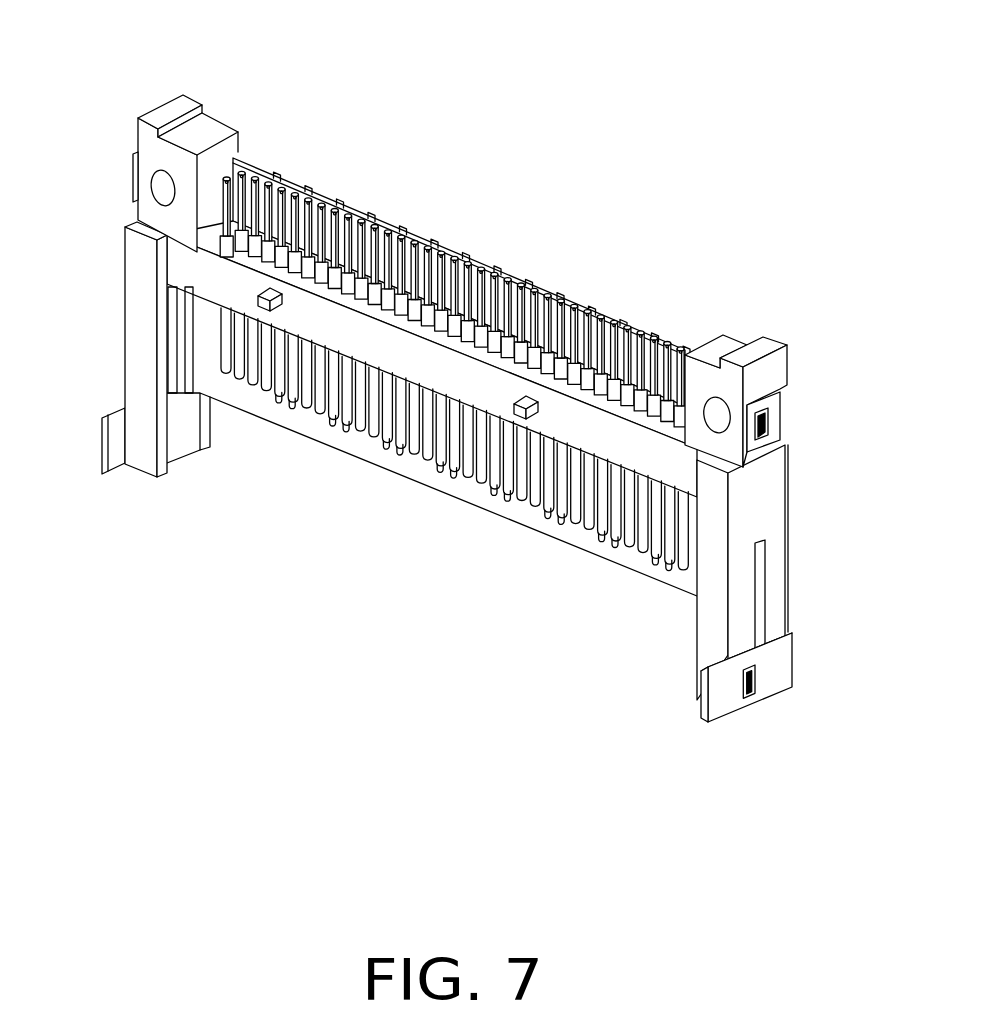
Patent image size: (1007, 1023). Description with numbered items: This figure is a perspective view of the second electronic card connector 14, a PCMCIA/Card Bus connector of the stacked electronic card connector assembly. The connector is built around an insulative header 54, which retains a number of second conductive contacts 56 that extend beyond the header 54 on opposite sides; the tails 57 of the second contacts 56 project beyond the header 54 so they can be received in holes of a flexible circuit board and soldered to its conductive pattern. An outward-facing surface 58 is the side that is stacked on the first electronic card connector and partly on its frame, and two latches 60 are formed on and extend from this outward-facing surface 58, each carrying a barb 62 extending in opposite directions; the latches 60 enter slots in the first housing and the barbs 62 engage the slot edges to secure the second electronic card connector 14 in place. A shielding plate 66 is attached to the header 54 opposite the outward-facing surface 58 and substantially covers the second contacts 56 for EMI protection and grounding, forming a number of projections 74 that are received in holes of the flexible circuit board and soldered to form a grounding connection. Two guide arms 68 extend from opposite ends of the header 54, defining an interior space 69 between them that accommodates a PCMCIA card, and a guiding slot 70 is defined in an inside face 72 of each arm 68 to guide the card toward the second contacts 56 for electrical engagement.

The second electronic card connector 14 is at (398, 49).
The insulative header 54 is at (597, 470).
The second conductive contacts 56 is at (639, 538).
The tails 57 is at (593, 318).
The outward-facing surface 58 is at (445, 376).
The latches 60 is at (273, 305).
The barb 62 is at (527, 410).
The shielding plate 66 is at (530, 278).
The guide arms 68 is at (145, 336).
The interior space 69 is at (355, 482).
The guiding slot 70 is at (183, 437).
The inside face 72 is at (165, 441).
The projections 74 is at (481, 257).